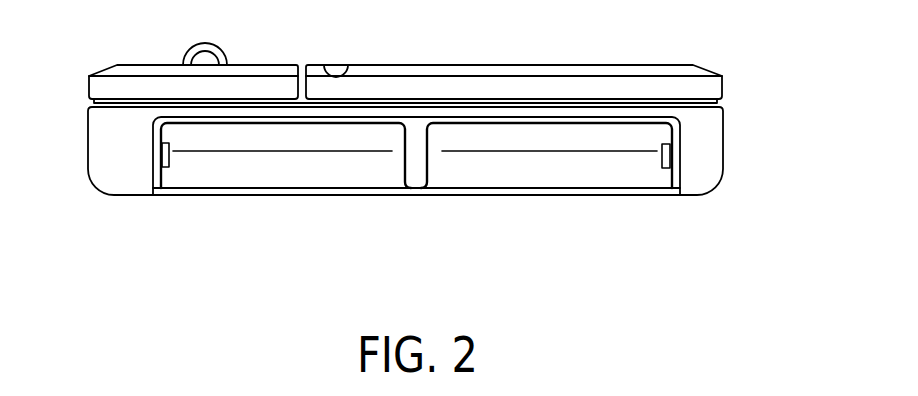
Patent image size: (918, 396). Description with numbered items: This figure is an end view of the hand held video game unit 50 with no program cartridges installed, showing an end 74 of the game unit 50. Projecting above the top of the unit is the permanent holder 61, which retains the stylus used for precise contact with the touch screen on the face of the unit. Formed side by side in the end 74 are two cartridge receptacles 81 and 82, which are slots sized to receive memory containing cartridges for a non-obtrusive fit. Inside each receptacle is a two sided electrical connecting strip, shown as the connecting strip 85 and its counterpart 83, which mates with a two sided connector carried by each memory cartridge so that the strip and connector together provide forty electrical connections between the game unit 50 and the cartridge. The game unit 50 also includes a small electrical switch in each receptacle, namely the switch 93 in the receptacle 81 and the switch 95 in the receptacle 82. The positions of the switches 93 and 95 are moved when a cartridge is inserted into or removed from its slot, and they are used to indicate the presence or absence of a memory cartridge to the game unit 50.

The hand held video game unit 50 is at (742, 103).
The permanent holder 61 is at (187, 60).
The end 74 is at (123, 180).
The cartridge receptacle 81 is at (202, 163).
The cartridge receptacle 82 is at (580, 163).
The first slot 83 is at (278, 152).
The two sided electrical connecting strip 85 is at (480, 152).
The electrical switch 93 is at (164, 150).
The electrical switch 95 is at (670, 157).